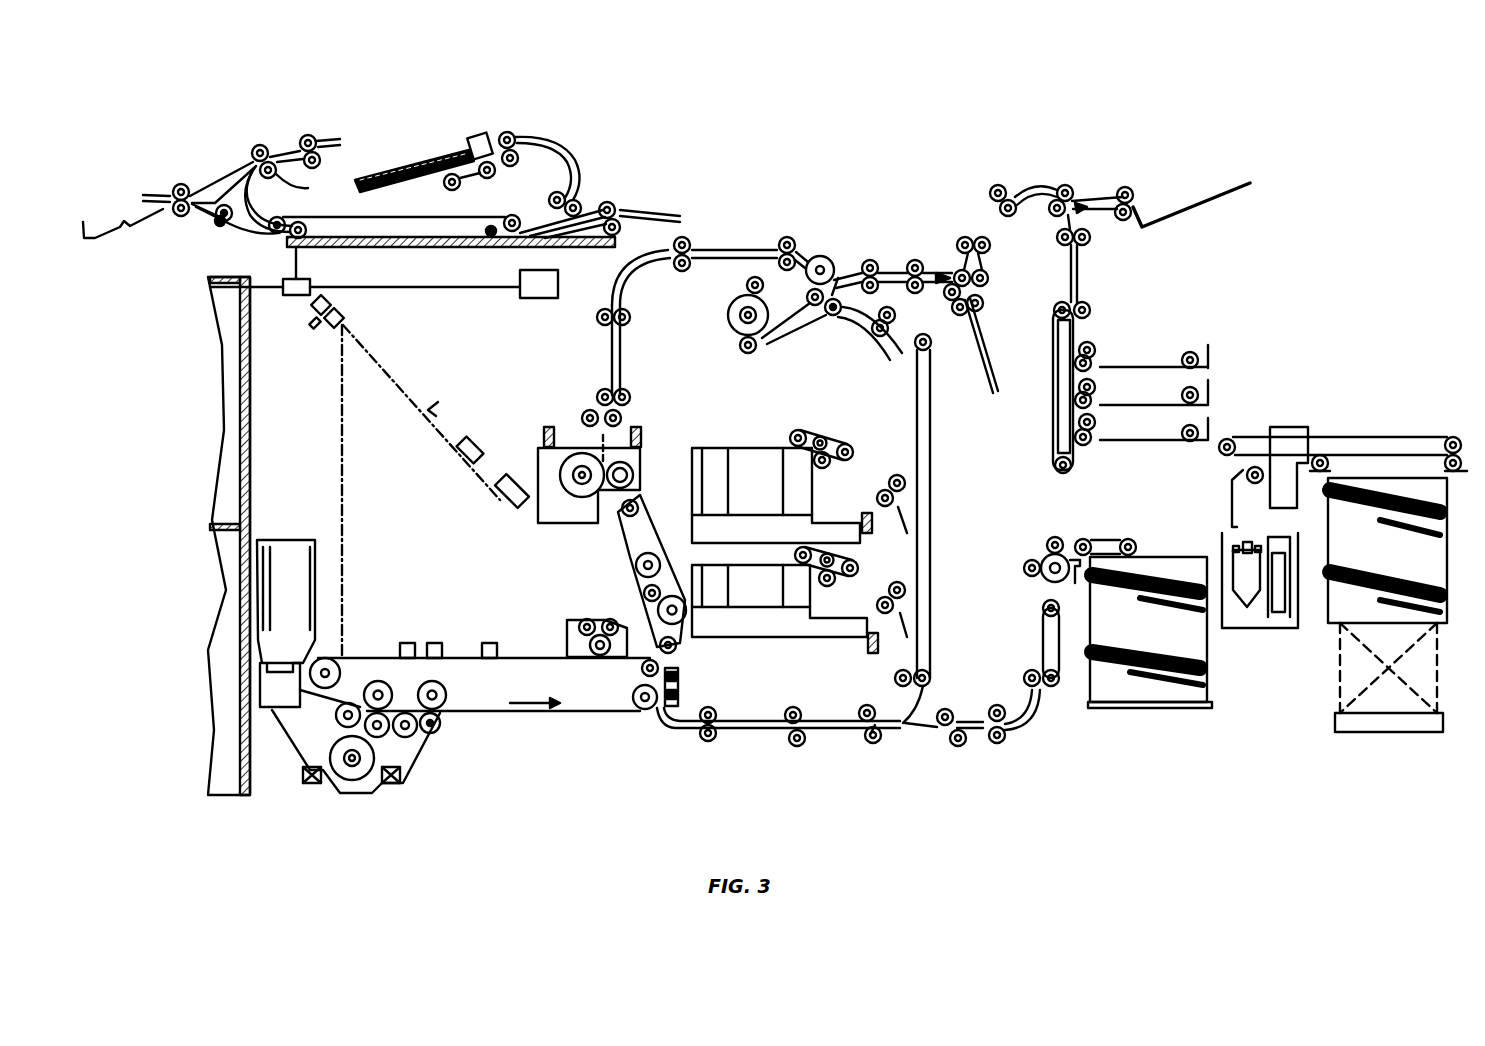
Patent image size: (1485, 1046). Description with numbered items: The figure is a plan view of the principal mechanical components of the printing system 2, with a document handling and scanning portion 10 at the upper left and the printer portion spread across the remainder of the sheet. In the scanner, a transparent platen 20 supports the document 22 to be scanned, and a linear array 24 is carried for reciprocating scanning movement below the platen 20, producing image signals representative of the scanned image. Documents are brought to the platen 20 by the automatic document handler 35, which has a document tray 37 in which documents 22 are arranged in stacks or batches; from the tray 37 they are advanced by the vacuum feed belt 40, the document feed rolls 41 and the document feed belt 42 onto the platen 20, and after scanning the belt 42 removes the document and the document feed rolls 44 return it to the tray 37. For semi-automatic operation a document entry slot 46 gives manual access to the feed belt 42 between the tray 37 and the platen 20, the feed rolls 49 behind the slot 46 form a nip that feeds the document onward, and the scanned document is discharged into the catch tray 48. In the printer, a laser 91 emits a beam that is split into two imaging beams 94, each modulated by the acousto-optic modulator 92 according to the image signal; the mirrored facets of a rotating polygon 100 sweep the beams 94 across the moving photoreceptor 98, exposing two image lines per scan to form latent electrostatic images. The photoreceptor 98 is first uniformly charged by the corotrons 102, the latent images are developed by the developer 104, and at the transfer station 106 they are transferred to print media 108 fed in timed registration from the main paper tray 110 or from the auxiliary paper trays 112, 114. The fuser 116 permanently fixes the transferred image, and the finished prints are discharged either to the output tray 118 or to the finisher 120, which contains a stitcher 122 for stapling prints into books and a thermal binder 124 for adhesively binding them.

The printing system 2 is at (797, 162).
The label feeder 10 is at (207, 167).
The transparent platen 20 is at (455, 246).
The document 22 is at (395, 186).
The linear array 24 is at (288, 278).
The automatic document handler 35 is at (415, 143).
The document tray 37 is at (396, 188).
The vacuum feed belt 40 is at (495, 178).
The document feed rolls 41 is at (520, 136).
The document feed belt 42 is at (455, 212).
The document feed rolls 44 is at (312, 168).
The document entry slot 46 is at (628, 207).
The catch tray 48 is at (150, 224).
The feed rolls 49 is at (607, 201).
The laser 91 is at (508, 508).
The acousto-optic modulator 92 is at (478, 438).
The imaging beams 94 is at (446, 398).
The photoreceptor 98 is at (517, 657).
The rotating polygon 100 is at (334, 325).
The corotrons 102 is at (489, 643).
The developer 104 is at (418, 745).
The transfer station 106 is at (645, 733).
The print media 108 is at (1265, 668).
The main paper tray 110 is at (1125, 707).
The auxiliary paper tray 112 is at (743, 633).
The auxiliary paper tray 114 is at (748, 450).
The fuser 116 is at (654, 456).
The output tray 118 is at (1225, 193).
The finisher 120 is at (1262, 365).
The stitcher 122 is at (1208, 377).
The thermal binder 124 is at (1365, 430).